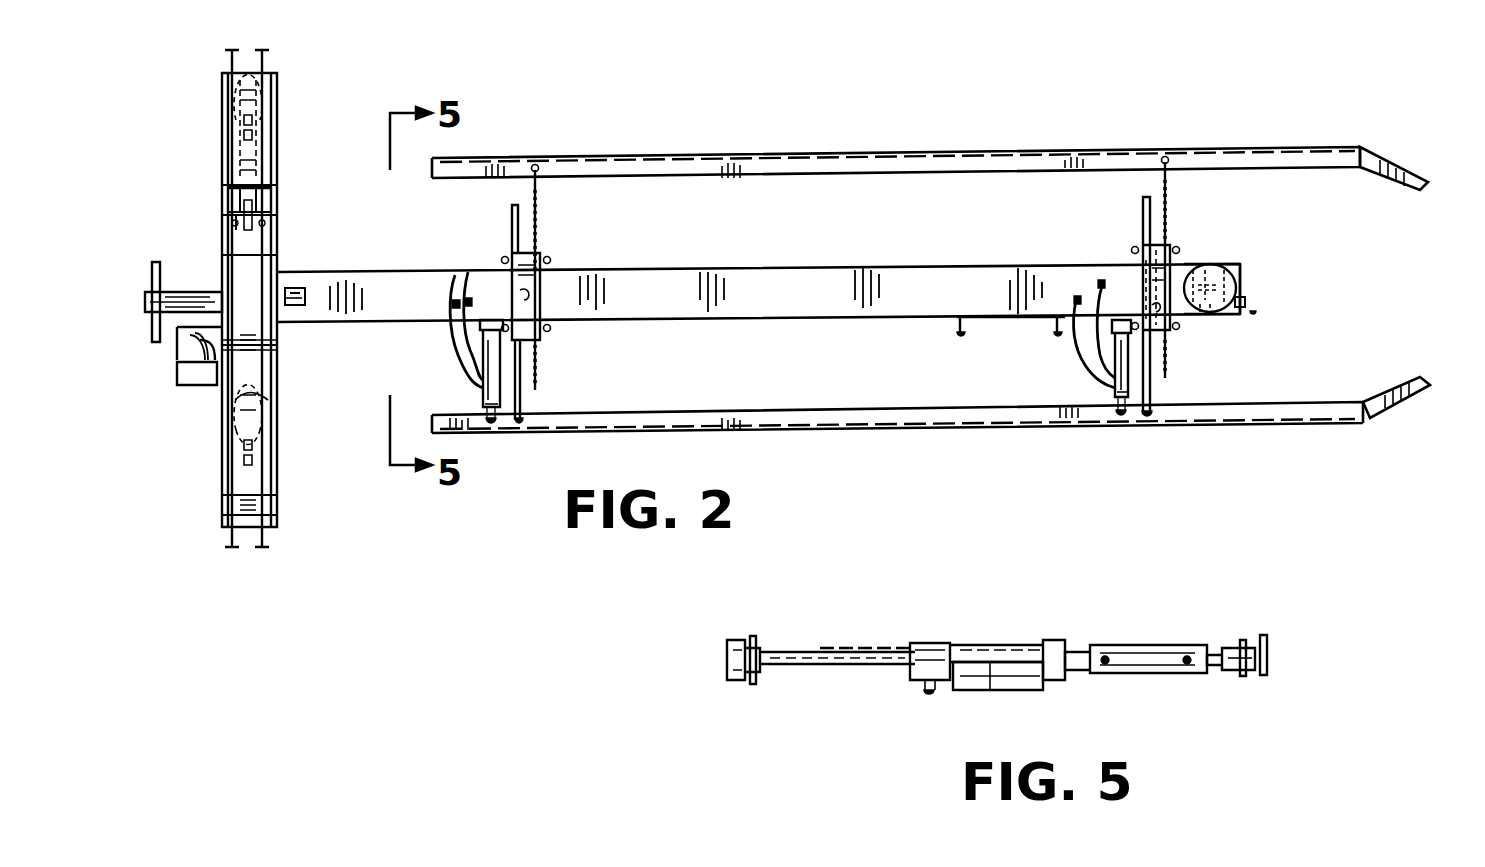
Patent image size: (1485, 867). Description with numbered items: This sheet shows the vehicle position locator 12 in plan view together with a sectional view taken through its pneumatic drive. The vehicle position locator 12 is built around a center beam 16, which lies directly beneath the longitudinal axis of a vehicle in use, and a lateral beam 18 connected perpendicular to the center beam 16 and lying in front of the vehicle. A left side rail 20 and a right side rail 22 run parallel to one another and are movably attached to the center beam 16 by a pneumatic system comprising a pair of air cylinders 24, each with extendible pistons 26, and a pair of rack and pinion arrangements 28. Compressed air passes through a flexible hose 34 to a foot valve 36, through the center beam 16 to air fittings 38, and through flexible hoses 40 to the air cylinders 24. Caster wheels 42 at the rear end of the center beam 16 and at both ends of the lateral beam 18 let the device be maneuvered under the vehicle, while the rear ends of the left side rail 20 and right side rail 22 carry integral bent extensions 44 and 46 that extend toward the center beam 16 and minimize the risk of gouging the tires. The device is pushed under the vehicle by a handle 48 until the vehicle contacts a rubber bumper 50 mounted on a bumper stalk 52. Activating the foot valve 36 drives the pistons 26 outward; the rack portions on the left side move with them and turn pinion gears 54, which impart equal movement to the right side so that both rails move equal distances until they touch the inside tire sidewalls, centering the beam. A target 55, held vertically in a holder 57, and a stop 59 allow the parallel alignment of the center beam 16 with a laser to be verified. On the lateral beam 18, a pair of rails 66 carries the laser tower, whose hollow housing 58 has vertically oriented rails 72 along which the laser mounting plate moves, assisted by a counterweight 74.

In FIG. 2, the vehicle position locator 12 is at (699, 96).
In FIG. 2, the center beam 16 is at (755, 268).
In FIG. 5, the center beam 16 is at (975, 692).
In FIG. 2, the lateral beam 18 is at (228, 490).
In FIG. 2, the left side rail 20 is at (835, 432).
In FIG. 5, the left side rail 20 is at (1268, 655).
In FIG. 2, the right side rail 22 is at (885, 150).
In FIG. 5, the right side rail 22 is at (727, 660).
In FIG. 2, the air cylinders 24 is at (483, 375).
In FIG. 5, the air cylinders 24 is at (1150, 675).
In FIG. 2, the extendible pistons 26 is at (488, 408).
In FIG. 5, the extendible pistons 26 is at (1215, 675).
In FIG. 2, the rack and pinion arrangements 28 is at (542, 210).
In FIG. 5, the rack and pinion arrangements 28 is at (835, 665).
In FIG. 2, the flexible hose 34 is at (185, 350).
In FIG. 2, the foot valve 36 is at (200, 386).
In FIG. 2, the air fittings 38 is at (460, 265).
In FIG. 2, the flexible hoses 40 is at (458, 332).
In FIG. 2, the caster wheels 42 is at (262, 128).
In FIG. 2, the bent extension 44 is at (1395, 392).
In FIG. 2, the bent extension 46 is at (1410, 186).
In FIG. 2, the handle 48 is at (155, 338).
In FIG. 2, the bumper 50 is at (302, 300).
In FIG. 2, the bumper stalk 52 is at (298, 288).
In FIG. 2, the pinion gears 54 is at (550, 305).
In FIG. 5, the pinion gears 54 is at (975, 642).
In FIG. 2, the target 55 is at (968, 332).
In FIG. 2, the holder 57 is at (1252, 312).
In FIG. 2, the hollow housing 58 is at (228, 200).
In FIG. 2, the stop 59 is at (277, 345).
In FIG. 2, the rails 66 is at (265, 410).
In FIG. 2, the rails 72 is at (237, 240).
In FIG. 2, the counterweight 74 is at (230, 190).